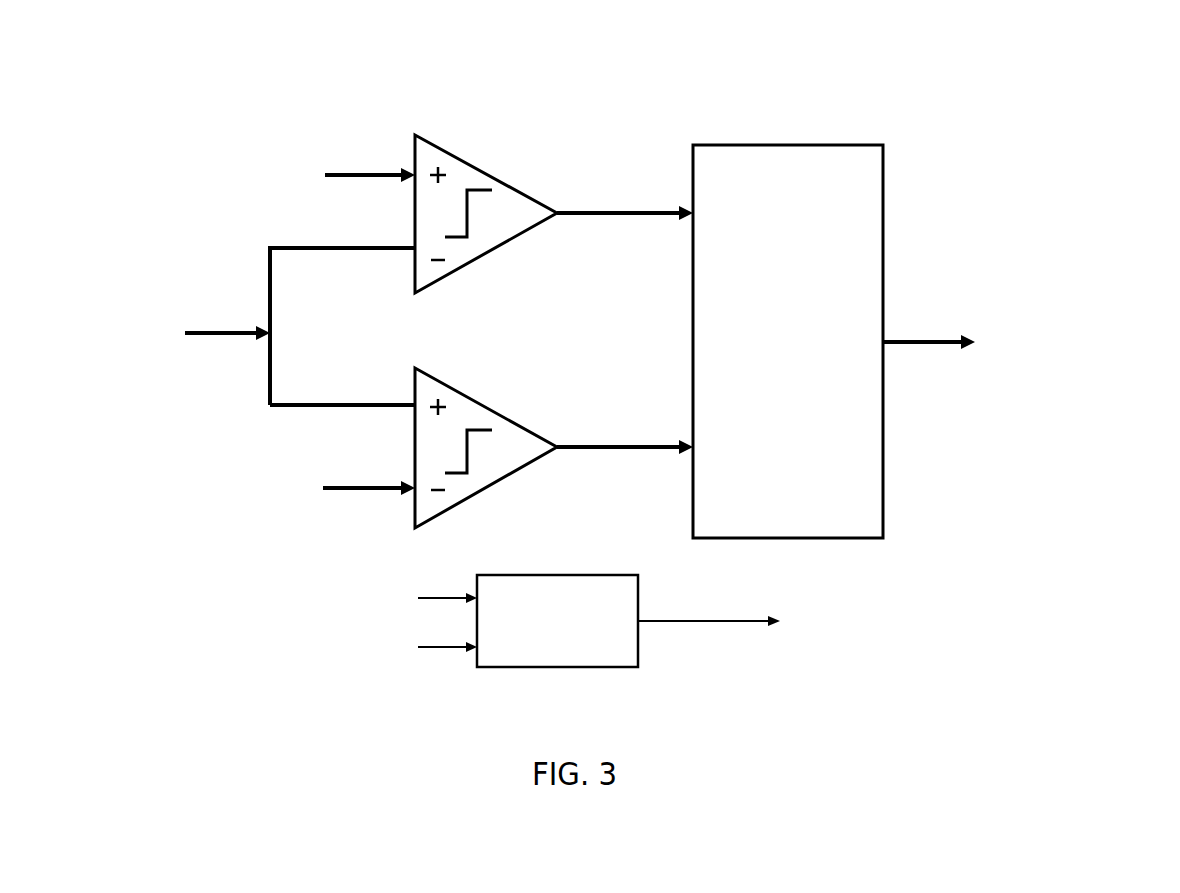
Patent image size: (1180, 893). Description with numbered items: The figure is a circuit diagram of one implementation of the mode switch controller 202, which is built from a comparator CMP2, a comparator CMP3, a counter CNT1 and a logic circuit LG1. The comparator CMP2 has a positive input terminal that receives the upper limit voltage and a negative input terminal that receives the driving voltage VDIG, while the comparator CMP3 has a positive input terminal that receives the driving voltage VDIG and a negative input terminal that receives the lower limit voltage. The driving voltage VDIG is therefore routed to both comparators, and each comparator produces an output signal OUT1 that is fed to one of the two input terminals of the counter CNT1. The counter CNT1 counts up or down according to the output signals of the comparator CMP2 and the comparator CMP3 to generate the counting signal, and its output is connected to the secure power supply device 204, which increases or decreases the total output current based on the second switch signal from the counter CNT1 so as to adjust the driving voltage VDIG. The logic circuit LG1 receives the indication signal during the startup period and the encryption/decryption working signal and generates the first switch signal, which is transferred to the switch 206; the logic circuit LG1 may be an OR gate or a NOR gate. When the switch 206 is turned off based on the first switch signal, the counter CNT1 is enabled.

The mode switch controller 202 is at (172, 61).
The comparator CMP2 is at (450, 150).
The comparator CMP3 is at (460, 392).
The counter CNT1 is at (722, 146).
The logic circuit LG1 is at (527, 576).
The output signal OUT1 is at (625, 313).
The driving voltage VDIG is at (300, 326).
The secure power supply device 204 is at (1029, 341).
The switch 206 is at (795, 625).